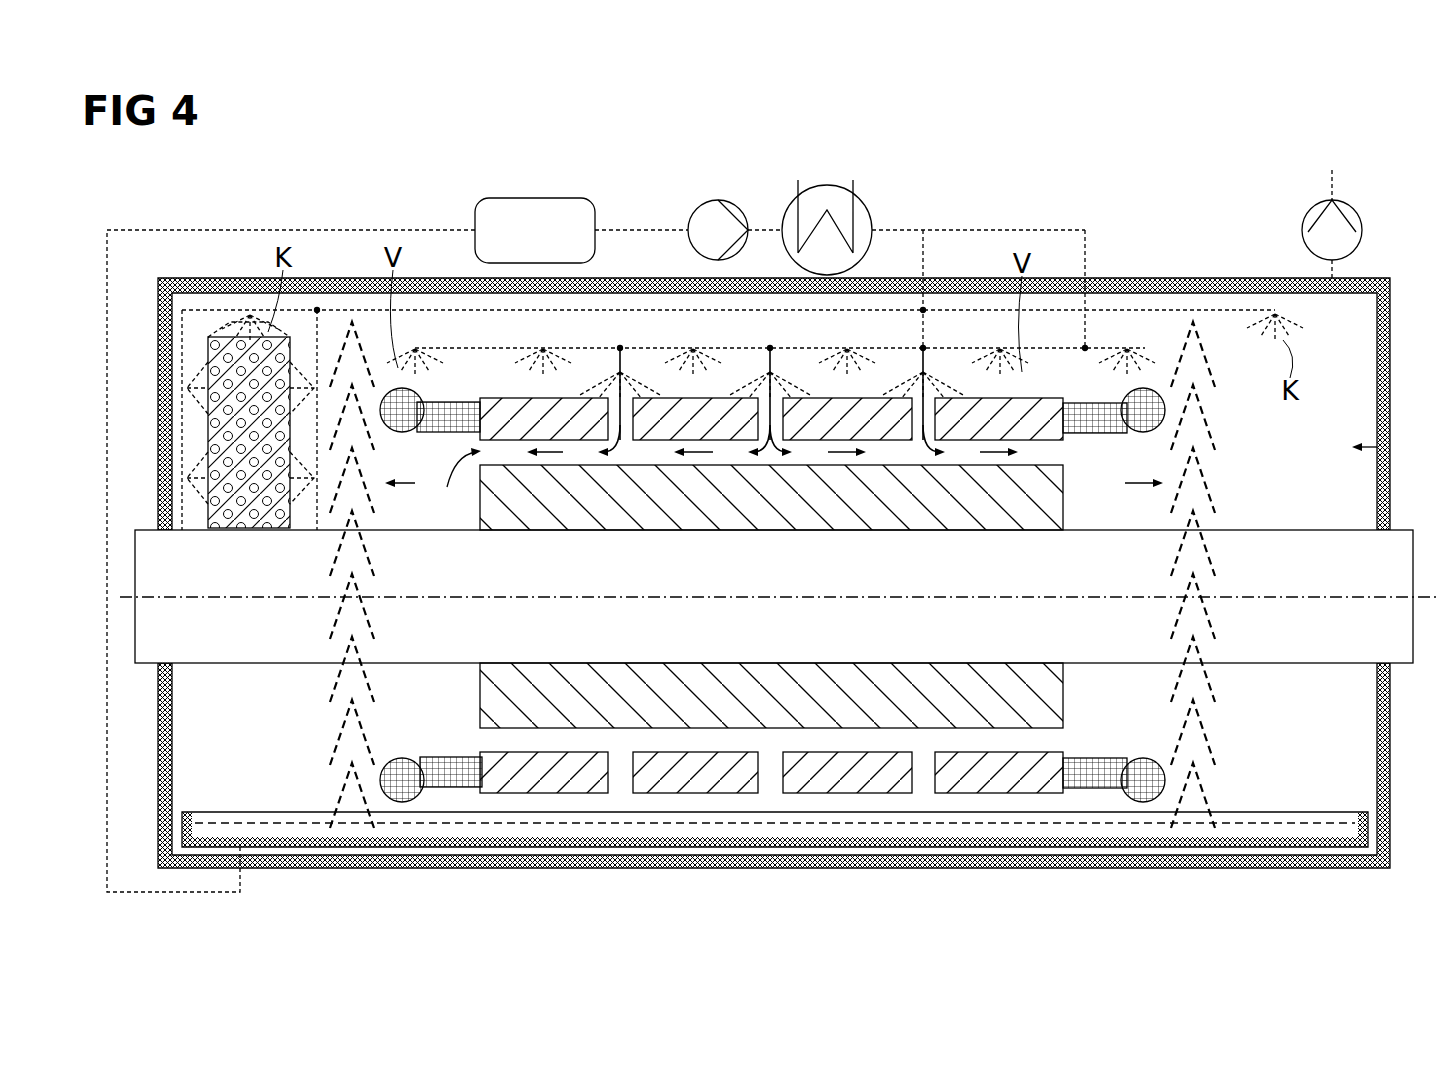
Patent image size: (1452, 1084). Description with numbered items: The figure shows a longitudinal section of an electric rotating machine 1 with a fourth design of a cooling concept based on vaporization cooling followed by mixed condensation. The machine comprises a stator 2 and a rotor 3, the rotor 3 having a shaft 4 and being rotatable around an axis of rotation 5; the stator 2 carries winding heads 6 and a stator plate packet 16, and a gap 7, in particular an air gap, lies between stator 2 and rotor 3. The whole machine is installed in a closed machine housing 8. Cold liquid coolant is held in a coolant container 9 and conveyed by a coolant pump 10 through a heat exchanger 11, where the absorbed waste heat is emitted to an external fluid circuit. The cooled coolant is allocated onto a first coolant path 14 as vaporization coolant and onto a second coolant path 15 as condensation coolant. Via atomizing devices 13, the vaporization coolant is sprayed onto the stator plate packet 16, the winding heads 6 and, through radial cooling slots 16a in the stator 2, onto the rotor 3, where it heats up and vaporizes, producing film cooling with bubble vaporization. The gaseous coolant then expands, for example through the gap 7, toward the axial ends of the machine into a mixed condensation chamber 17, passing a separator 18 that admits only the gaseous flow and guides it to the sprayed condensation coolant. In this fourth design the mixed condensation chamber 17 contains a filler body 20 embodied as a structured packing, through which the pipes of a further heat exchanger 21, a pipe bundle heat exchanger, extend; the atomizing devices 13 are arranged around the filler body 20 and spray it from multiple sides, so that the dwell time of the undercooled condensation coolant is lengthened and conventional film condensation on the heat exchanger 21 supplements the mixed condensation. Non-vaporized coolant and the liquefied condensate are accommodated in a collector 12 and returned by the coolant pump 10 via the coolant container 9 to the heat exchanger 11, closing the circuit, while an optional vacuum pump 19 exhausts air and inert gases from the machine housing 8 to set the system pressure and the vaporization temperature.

The electric rotating machine 1 is at (772, 735).
The stator 2 is at (1055, 440).
The rotor 3 is at (1062, 500).
The shaft 4 is at (1335, 545).
The axis of rotation 5 is at (1432, 595).
The winding heads 6 is at (1100, 433).
The gap 7 is at (774, 471).
The machine housing 8 is at (1392, 745).
The coolant container 9 is at (537, 198).
The coolant pump 10 is at (722, 200).
The heat exchanger 11 is at (827, 185).
The collector 12 is at (1372, 828).
The atomizing devices 13 is at (250, 313).
The first coolant path 14 is at (1085, 230).
The second coolant path 15 is at (923, 230).
The stator plate packet 16 is at (493, 398).
The radial cooling slots 16a is at (628, 392).
The mixed condensation chamber 17 is at (205, 440).
The separator 18 is at (340, 735).
The vacuum pump 19 is at (1362, 230).
The filler body 20 is at (212, 420).
The heat exchanger 21 is at (213, 340).